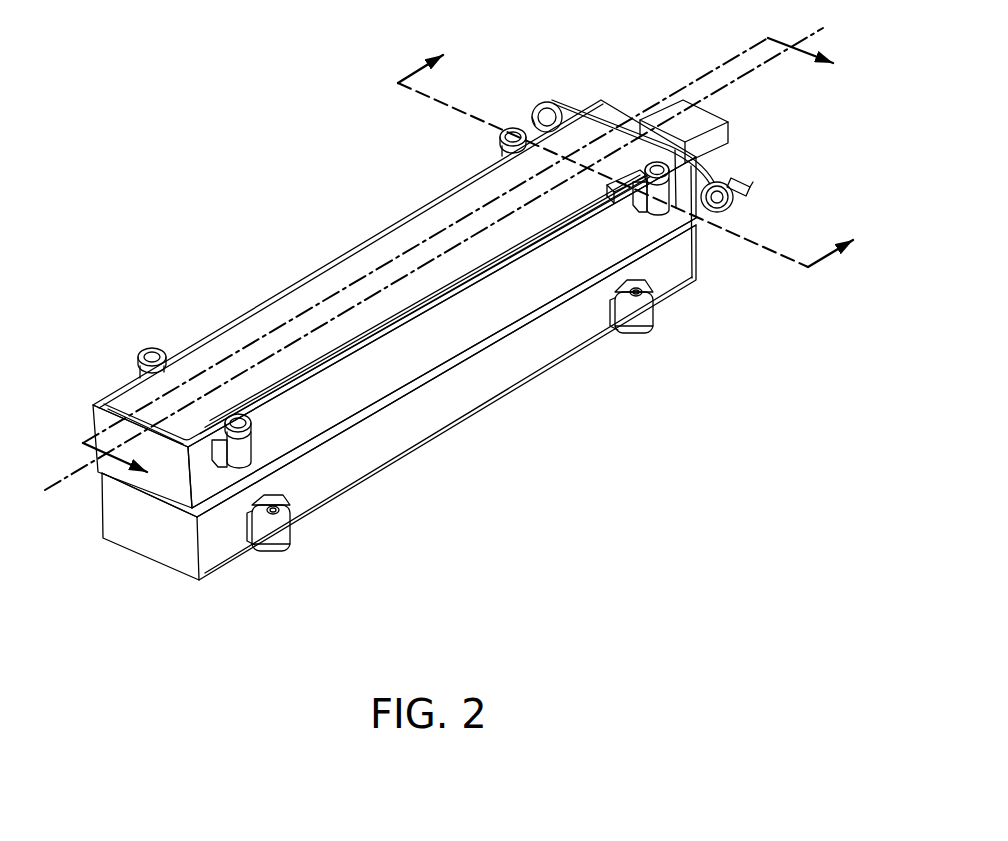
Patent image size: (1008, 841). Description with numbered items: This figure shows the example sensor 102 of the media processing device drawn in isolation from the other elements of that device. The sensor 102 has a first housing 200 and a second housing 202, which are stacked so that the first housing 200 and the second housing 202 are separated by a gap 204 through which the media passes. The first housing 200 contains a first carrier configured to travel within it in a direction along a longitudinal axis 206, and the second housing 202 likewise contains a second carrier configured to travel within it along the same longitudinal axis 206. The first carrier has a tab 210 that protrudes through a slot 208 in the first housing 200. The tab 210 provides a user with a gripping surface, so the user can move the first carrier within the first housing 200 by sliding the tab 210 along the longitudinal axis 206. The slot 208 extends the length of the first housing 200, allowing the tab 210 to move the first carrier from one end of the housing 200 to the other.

The sensor 102 is at (212, 262).
The first housing 200 is at (440, 335).
The second housing 202 is at (160, 548).
The gap 204 is at (297, 453).
The longitudinal axis 206 is at (882, 47).
The slot 208 is at (520, 253).
The tab 210 is at (722, 208).